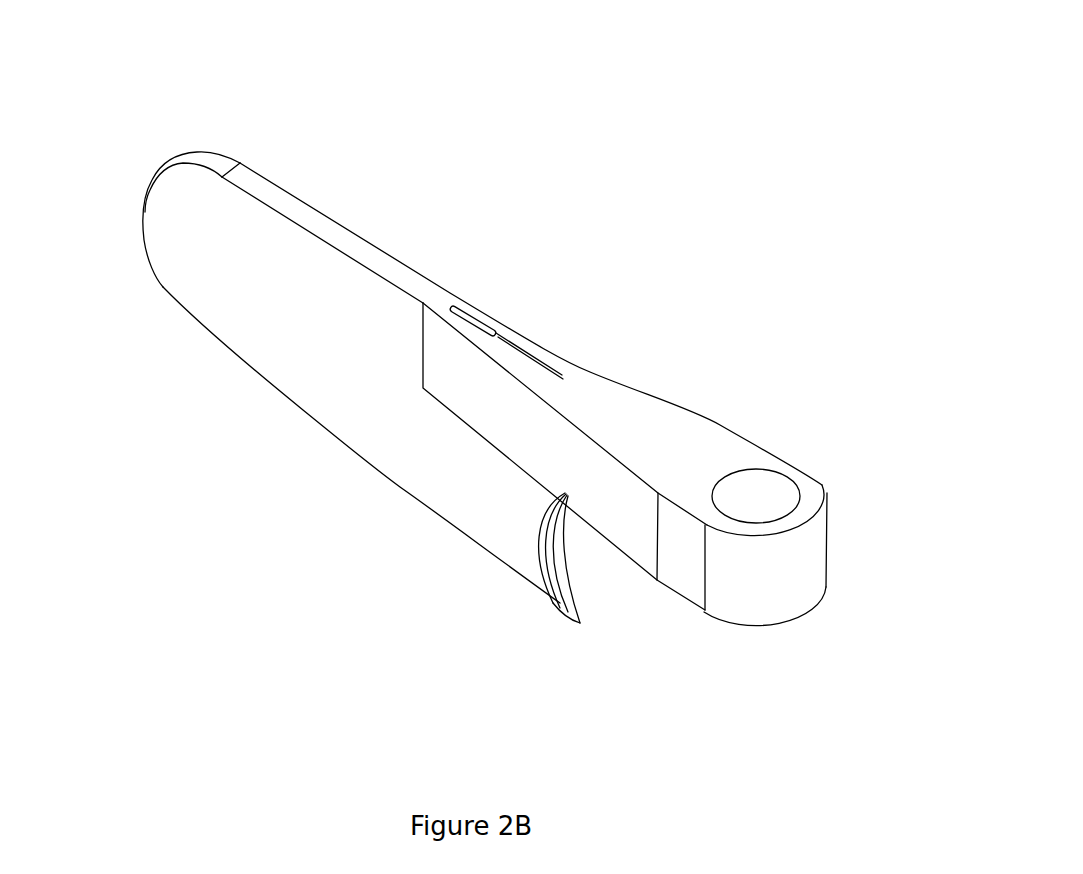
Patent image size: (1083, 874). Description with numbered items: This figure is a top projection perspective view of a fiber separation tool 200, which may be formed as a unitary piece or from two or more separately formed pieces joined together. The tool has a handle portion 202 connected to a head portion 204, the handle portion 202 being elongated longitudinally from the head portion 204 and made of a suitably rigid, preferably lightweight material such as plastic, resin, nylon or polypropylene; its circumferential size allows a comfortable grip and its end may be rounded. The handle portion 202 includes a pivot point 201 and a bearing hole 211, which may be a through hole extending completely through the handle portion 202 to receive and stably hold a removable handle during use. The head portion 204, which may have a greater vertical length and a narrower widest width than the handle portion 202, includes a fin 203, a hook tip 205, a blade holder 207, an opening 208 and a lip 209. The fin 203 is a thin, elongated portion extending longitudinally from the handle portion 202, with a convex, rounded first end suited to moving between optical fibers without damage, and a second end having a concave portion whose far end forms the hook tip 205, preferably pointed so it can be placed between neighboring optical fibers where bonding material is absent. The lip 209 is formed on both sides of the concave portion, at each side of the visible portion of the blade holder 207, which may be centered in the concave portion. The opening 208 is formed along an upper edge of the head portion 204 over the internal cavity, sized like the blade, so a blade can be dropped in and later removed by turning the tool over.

The fiber separation tool 200 is at (663, 117).
The pivot point 201 is at (653, 577).
The handle portion 202 is at (898, 407).
The fin 203 is at (150, 232).
The head portion 204 is at (545, 692).
The hook tip 205 is at (565, 612).
The blade holder 207 is at (527, 578).
The opening 208 is at (473, 310).
The lip 209 is at (537, 520).
The bearing hole 211 is at (772, 483).